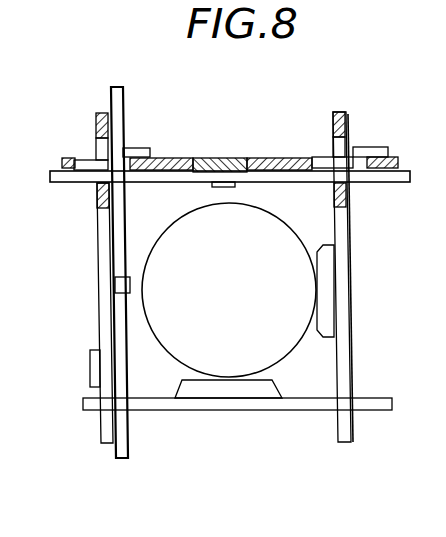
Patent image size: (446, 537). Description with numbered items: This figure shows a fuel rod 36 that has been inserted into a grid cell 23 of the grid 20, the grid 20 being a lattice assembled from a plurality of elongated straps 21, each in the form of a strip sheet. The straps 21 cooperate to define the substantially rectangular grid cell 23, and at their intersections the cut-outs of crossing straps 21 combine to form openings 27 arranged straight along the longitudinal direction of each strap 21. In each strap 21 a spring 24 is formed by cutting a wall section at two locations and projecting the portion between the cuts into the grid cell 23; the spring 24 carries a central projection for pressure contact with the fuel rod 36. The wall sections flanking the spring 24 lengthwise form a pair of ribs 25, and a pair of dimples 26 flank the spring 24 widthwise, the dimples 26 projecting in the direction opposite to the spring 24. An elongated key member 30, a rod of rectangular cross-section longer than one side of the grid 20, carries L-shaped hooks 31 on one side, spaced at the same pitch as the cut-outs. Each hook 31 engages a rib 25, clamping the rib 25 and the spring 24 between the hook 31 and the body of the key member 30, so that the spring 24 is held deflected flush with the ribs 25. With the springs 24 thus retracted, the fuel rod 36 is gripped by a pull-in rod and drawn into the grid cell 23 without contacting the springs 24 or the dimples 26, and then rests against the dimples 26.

The grid 20 is at (352, 110).
The strap 21 is at (108, 242).
The grid cell 23 is at (328, 362).
The spring 24 is at (226, 158).
The rib 25 is at (165, 158).
The dimple 26 is at (333, 313).
The opening 27 is at (97, 152).
The key member 30 is at (397, 183).
The hook 31 is at (137, 148).
The fuel rod 36 is at (298, 247).